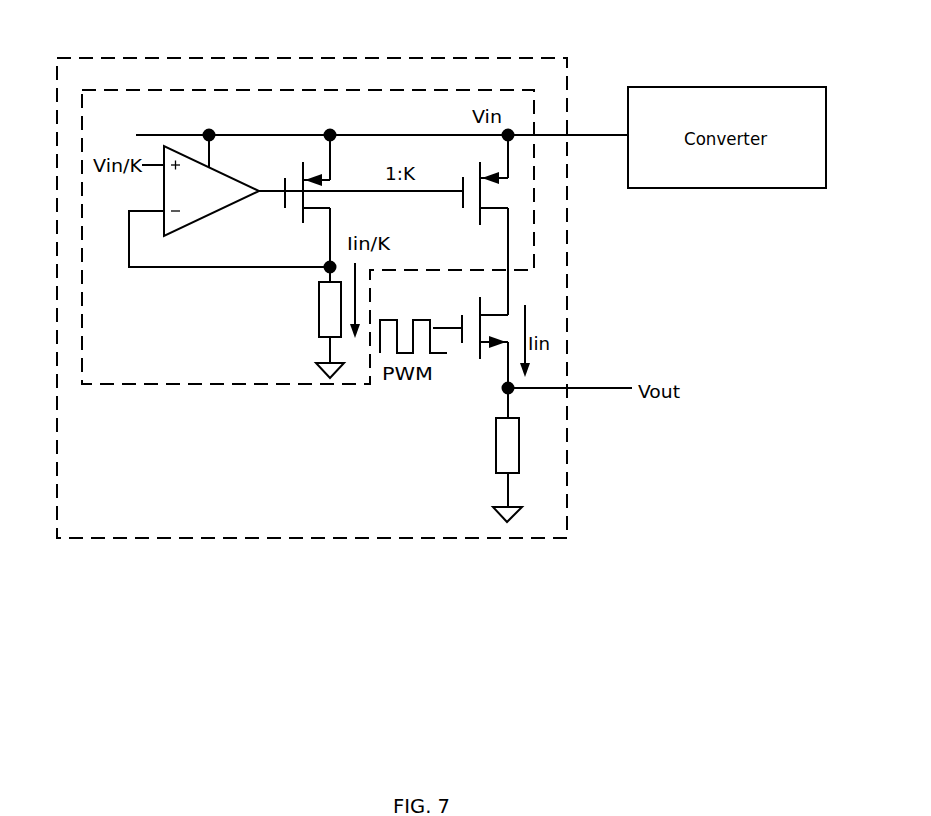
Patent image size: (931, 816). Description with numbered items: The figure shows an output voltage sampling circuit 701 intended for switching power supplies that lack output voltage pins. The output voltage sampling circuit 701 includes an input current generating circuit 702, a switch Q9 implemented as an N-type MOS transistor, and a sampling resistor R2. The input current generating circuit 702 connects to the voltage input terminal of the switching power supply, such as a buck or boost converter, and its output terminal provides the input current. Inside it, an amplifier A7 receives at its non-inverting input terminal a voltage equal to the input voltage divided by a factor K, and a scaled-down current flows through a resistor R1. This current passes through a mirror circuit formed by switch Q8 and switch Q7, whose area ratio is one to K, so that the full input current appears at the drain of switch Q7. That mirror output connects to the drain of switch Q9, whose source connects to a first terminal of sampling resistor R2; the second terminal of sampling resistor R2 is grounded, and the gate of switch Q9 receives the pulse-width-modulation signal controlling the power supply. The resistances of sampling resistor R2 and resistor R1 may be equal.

The output voltage sampling circuit 701 is at (109, 522).
The input current generating circuit 702 is at (127, 371).
The amplifier A7 is at (206, 197).
The switch Q7 is at (470, 225).
The switch Q8 is at (301, 201).
The switch Q9 is at (470, 339).
The resistor R1 is at (318, 322).
The sampling resistor R2 is at (520, 455).